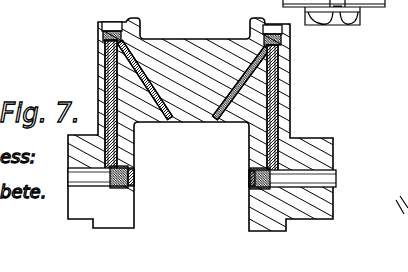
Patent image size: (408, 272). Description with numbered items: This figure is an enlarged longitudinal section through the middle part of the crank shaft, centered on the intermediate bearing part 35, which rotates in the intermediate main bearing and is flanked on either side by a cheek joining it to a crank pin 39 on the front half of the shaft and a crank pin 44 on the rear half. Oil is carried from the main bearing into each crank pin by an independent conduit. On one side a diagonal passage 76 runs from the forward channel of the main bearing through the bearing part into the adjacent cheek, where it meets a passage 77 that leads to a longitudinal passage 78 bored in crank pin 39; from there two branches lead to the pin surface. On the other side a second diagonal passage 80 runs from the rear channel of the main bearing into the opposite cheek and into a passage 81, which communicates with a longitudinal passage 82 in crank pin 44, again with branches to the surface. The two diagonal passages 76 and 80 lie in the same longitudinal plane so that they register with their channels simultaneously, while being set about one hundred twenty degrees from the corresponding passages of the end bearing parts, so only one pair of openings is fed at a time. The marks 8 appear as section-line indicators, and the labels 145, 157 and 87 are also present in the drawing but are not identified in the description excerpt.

The intermediate bearing part 35 is at (149, 55).
The top recess 145 is at (195, 24).
The diagonal passage 80 is at (191, 176).
The diagonal passage 76 is at (266, 76).
The passage 81 is at (110, 55).
The passage 77 is at (272, 112).
The longitudinal passage 82 is at (132, 182).
The longitudinal passage 78 is at (293, 172).
The crank pin 44 is at (82, 209).
The crank pin 39 is at (323, 157).
The dimension reference 8 is at (219, 120).
The upper member fragment 157 is at (208, 4).
The adjacent part fragment 87 is at (401, 132).